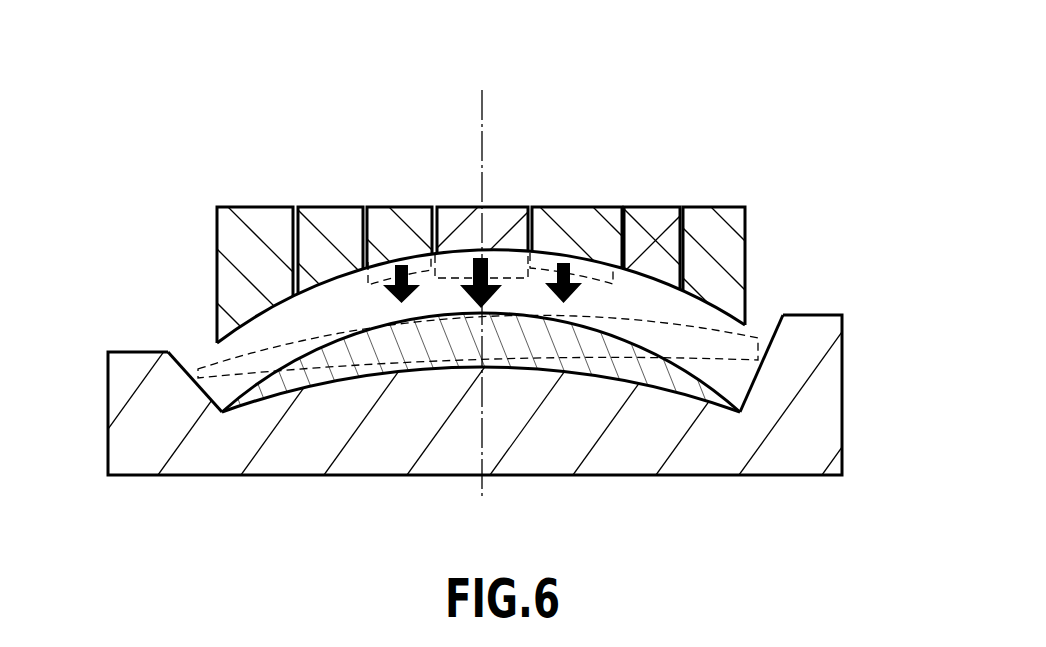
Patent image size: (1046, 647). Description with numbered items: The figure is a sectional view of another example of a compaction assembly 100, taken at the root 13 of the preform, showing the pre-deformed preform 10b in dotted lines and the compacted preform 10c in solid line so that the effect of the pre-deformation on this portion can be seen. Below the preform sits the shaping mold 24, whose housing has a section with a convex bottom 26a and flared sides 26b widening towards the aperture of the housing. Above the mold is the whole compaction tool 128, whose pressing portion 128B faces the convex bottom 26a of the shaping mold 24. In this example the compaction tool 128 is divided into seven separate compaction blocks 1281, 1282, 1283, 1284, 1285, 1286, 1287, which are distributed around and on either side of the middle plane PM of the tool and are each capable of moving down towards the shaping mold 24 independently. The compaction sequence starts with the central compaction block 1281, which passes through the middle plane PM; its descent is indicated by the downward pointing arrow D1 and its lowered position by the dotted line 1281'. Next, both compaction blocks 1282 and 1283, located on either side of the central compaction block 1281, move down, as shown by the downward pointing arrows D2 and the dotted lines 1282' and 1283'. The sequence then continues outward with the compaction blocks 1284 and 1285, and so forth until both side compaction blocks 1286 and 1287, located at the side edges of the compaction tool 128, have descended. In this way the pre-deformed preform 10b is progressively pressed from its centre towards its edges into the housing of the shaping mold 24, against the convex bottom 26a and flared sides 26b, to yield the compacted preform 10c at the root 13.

The forming device 100 is at (148, 282).
The compaction tool 128 is at (230, 128).
The pressing surface of upper die 128B is at (205, 197).
The side compaction block 1287 is at (258, 224).
The compaction block 1285 is at (333, 222).
The compaction block 1283 is at (435, 258).
The central compaction block 1281 is at (448, 243).
The compaction block 1282 is at (613, 258).
The compaction block 1284 is at (653, 223).
The side compaction block 1286 is at (718, 223).
The dotted line of central compaction block 1281' is at (479, 226).
The dotted line of compaction block 1283' is at (359, 293).
The dotted line of compaction block 1282' is at (611, 289).
The middle plane PM is at (484, 130).
The downward pointing arrow D1 is at (490, 276).
The downward pointing arrow D2 is at (392, 284).
The pre-deformed preform 10b is at (204, 358).
The compacted preform 10c is at (242, 398).
The root 13 is at (413, 340).
The shaping mold 24 is at (820, 400).
The convex bottom 26a is at (573, 365).
The flared sides 26b is at (762, 335).